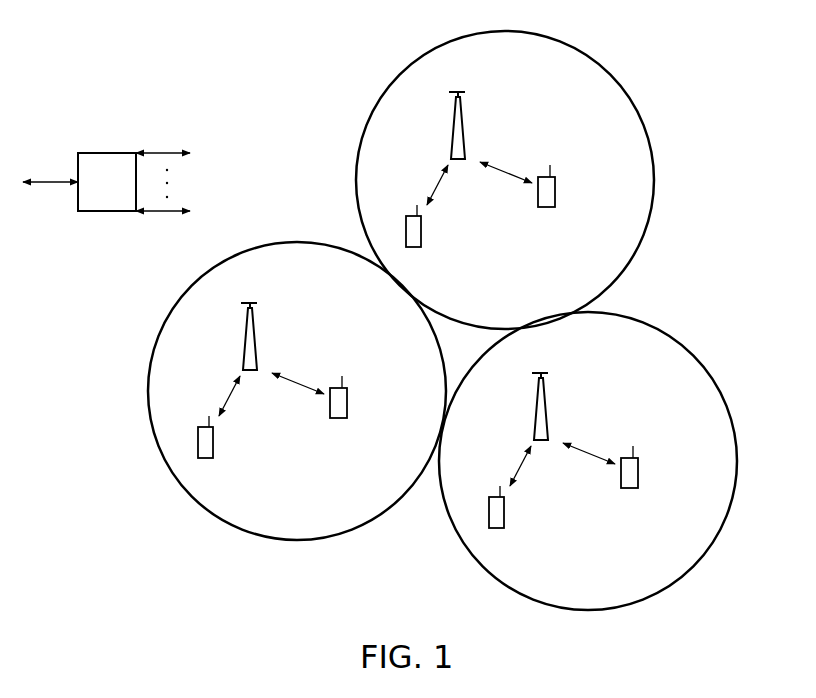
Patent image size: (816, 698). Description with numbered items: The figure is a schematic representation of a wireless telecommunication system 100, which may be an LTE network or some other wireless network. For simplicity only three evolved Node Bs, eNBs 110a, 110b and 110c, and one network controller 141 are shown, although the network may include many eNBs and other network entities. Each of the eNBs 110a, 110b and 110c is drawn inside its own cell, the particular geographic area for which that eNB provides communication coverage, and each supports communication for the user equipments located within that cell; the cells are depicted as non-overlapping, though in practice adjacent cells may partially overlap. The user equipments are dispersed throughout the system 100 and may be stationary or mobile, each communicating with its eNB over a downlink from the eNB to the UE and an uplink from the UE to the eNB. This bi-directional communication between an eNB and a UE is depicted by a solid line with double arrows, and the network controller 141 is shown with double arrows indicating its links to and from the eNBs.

The wireless telecommunication system 100 is at (782, 68).
The evolved Node B (eNB) 110a is at (498, 125).
The evolved Node B (eNB) 110b is at (291, 336).
The evolved Node B (eNB) 110c is at (581, 406).
The network controller 141 is at (86, 195).